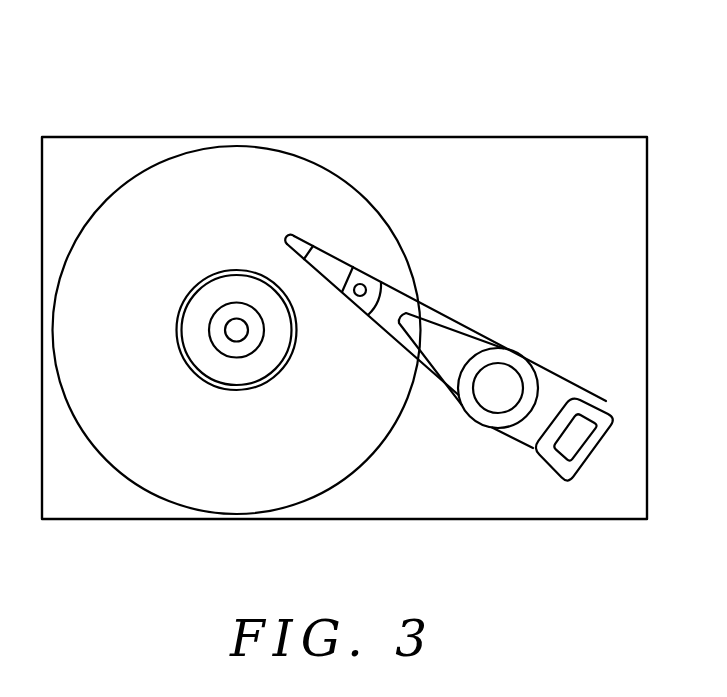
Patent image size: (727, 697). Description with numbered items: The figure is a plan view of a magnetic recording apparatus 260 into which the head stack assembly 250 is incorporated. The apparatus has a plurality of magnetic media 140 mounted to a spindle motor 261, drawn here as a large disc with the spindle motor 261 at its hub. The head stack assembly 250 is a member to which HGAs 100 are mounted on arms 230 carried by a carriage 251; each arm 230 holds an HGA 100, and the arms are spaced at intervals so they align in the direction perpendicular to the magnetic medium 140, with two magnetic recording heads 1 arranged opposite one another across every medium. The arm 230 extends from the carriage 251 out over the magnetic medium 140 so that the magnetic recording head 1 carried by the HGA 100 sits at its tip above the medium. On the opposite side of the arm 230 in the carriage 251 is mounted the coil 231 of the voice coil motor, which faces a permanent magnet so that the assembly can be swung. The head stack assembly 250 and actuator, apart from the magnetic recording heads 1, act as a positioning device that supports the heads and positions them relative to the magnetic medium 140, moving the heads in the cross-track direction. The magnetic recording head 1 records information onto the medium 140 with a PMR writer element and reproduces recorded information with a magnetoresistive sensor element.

The magnetic recording head 1 is at (300, 238).
The HGA 100 is at (337, 287).
The magnetic medium 140 is at (169, 501).
The arm 230 is at (425, 365).
The coil 231 is at (593, 452).
The head stack assembly 250 is at (510, 440).
The carriage 251 is at (497, 348).
The magnetic recording apparatus 260 is at (380, 131).
The spindle motor 261 is at (239, 342).